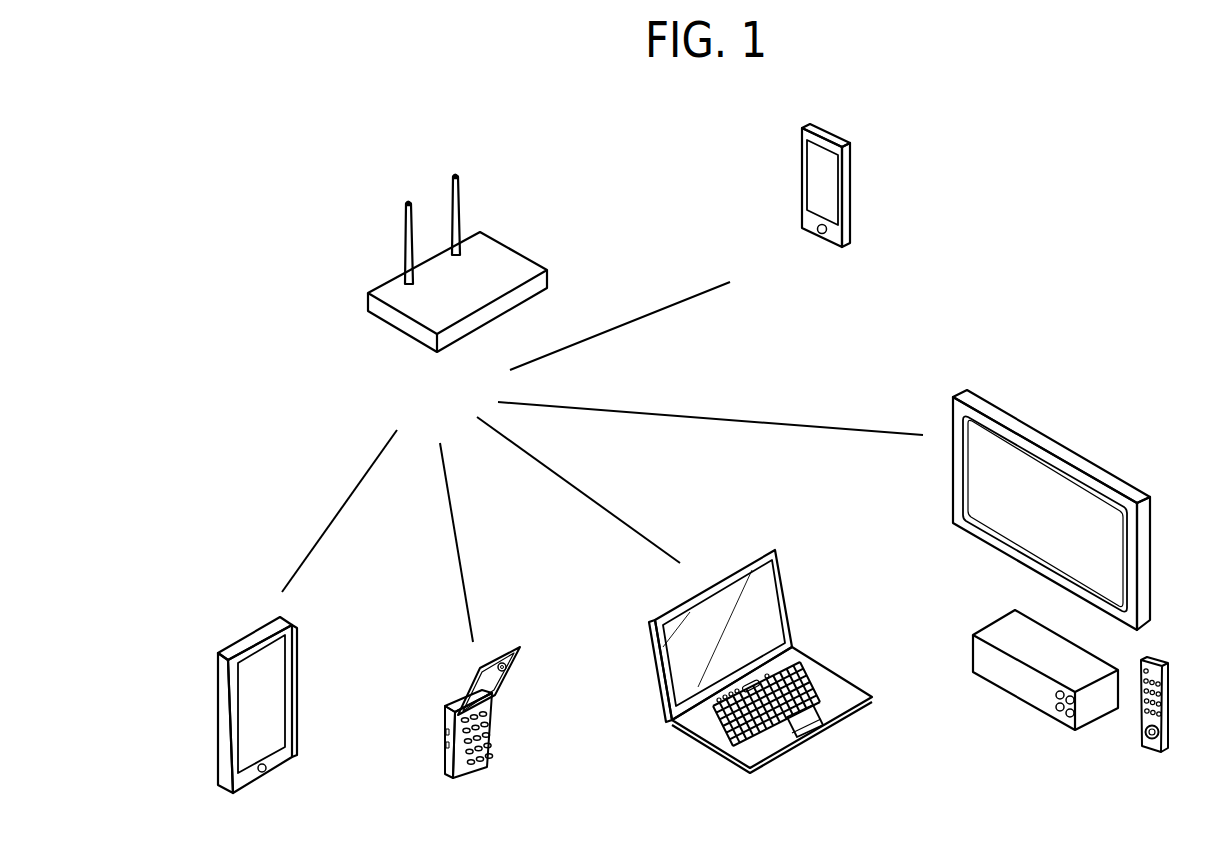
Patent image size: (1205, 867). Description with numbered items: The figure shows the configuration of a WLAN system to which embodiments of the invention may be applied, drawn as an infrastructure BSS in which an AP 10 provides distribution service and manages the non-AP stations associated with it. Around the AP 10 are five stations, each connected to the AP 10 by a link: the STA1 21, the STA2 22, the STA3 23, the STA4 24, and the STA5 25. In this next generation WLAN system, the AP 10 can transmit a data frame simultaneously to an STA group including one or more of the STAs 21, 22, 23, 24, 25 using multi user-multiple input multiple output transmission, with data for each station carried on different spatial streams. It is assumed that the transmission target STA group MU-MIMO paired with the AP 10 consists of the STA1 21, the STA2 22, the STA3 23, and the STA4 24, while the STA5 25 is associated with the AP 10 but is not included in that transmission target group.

The AP 10 is at (457, 304).
The STA1 21 is at (252, 742).
The STA2 22 is at (476, 757).
The STA3 23 is at (760, 698).
The STA4 24 is at (1060, 598).
The STA5 25 is at (819, 224).